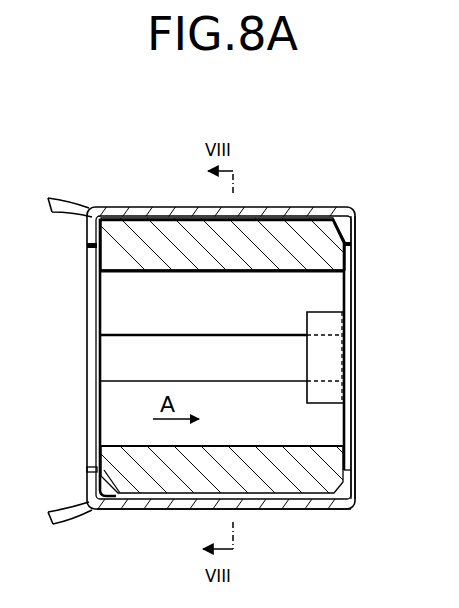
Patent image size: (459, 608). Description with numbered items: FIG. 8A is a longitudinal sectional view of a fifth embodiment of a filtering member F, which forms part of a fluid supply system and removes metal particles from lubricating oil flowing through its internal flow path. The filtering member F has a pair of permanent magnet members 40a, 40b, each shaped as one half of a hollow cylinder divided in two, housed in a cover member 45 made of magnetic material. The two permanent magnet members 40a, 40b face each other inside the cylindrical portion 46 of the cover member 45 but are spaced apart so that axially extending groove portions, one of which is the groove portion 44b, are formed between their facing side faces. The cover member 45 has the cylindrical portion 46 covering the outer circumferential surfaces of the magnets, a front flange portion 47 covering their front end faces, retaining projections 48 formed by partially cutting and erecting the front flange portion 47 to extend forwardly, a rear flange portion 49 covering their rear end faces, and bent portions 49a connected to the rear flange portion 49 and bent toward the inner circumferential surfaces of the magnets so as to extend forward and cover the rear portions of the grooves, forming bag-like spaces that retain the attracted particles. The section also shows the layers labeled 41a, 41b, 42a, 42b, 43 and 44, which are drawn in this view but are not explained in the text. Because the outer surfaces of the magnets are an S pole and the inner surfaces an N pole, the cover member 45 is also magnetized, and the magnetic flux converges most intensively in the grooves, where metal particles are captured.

The permanent magnet member 40a is at (163, 262).
The permanent magnet member 40b is at (123, 455).
The upper casing wall 41a is at (310, 210).
The lower casing wall 41b is at (293, 500).
The upper conductive layer 42a is at (273, 272).
The lower conductive layer 42b is at (267, 443).
The membrane 43 is at (405, 357).
The inner liner 44 is at (279, 358).
The groove portion 44b is at (117, 352).
The cover member 45 is at (170, 195).
The cylindrical portion 46 is at (132, 208).
The front flange portion 47 is at (87, 235).
The retaining projection 48 is at (72, 202).
The rear flange portion 49 is at (356, 226).
The bent portion 49a is at (332, 323).
The filtering member F is at (364, 118).